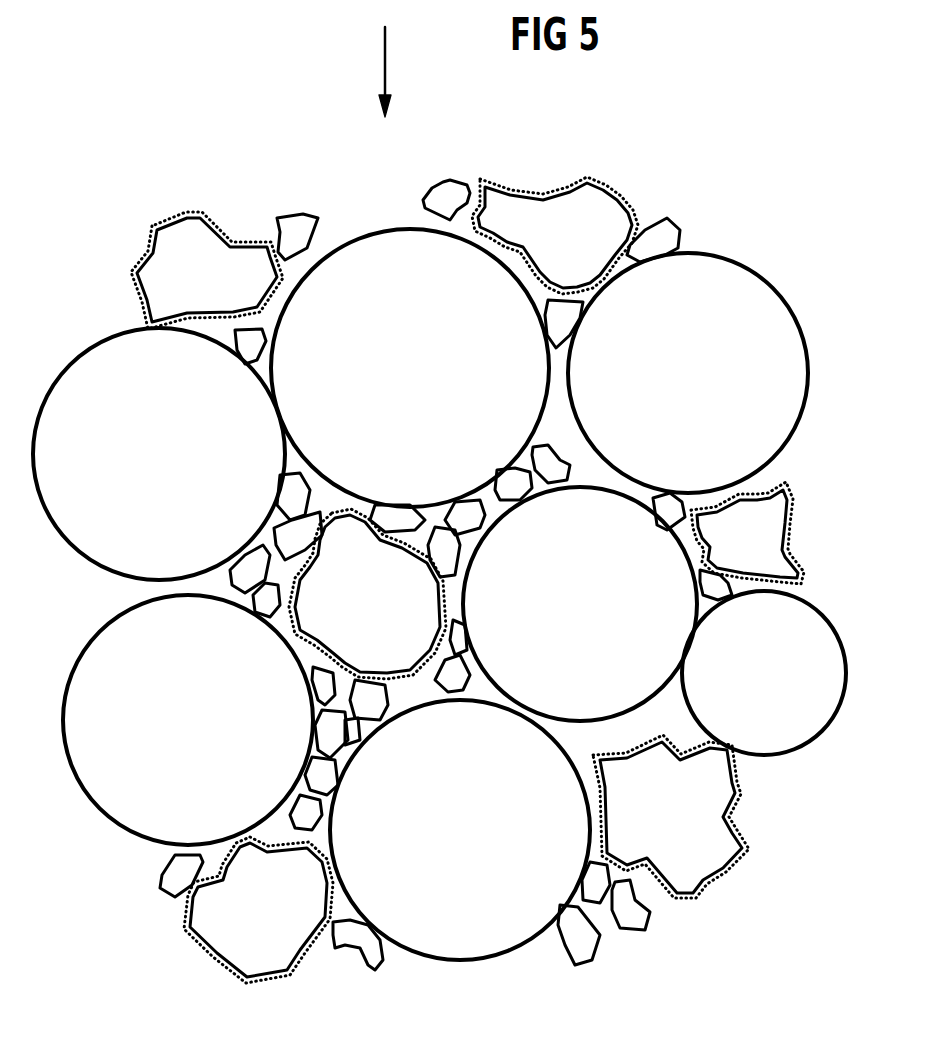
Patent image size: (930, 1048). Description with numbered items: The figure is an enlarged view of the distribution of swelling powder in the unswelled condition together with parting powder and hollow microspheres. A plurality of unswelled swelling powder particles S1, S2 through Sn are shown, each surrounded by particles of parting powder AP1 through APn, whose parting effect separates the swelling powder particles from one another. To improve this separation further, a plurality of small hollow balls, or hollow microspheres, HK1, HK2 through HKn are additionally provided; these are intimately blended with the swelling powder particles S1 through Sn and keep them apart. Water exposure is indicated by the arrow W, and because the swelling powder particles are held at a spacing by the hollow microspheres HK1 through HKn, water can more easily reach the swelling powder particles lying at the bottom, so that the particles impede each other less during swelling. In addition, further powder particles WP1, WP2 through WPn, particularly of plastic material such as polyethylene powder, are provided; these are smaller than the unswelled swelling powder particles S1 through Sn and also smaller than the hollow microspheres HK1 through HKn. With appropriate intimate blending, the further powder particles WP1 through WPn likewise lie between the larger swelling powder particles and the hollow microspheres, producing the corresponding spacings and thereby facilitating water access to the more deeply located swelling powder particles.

The arrow indicating water exposure W is at (385, 57).
The small hollow ball HK1 is at (77, 383).
The small hollow ball HK2 is at (377, 253).
The small hollow ball HKn is at (472, 942).
The unswelled swelling powder particle S1 is at (191, 238).
The unswelled swelling powder particle S2 is at (597, 213).
The unswelled swelling powder particle Sn is at (702, 870).
The particle of parting powder AP1 is at (235, 240).
The particle of parting powder APn is at (742, 840).
The further powder particle WP1 is at (670, 233).
The further powder particle WP2 is at (445, 192).
The further powder particle WPn is at (372, 955).